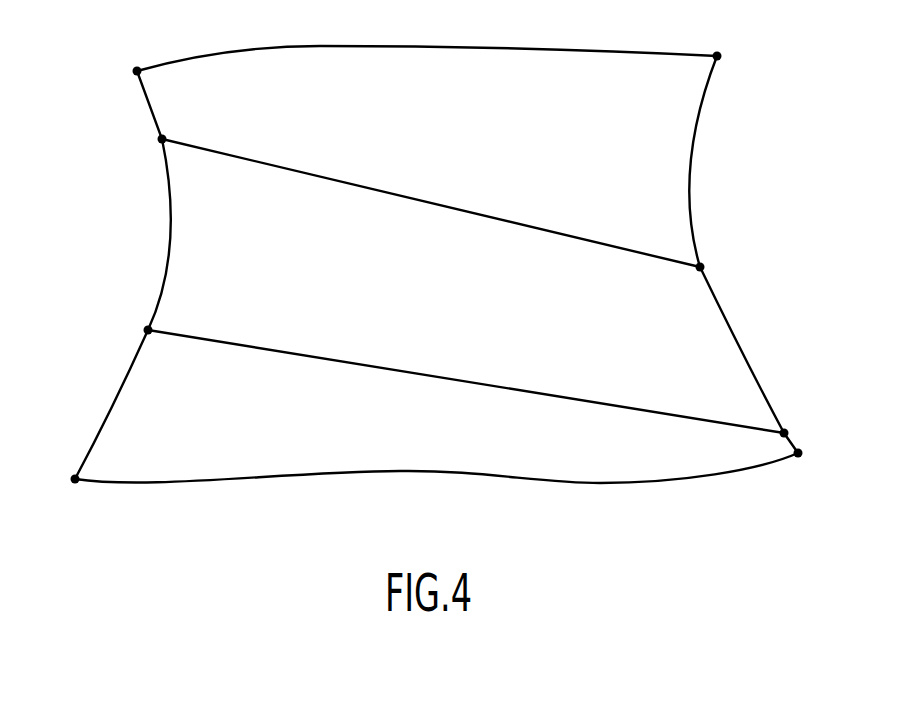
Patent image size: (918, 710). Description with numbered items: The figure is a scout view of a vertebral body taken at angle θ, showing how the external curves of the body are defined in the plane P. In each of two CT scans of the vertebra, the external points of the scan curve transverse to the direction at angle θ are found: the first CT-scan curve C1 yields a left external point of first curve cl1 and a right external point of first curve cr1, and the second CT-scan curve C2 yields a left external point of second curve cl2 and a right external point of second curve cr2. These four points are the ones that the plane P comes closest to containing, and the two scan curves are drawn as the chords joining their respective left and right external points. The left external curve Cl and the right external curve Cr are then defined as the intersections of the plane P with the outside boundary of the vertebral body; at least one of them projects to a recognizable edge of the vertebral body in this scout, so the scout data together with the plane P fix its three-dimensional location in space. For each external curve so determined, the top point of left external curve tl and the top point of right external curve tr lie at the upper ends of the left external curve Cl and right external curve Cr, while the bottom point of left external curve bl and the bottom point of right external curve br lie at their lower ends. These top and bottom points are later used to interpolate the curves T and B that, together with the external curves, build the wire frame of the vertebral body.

The left external curve Cl is at (158, 275).
The right external curve Cr is at (708, 254).
The first CT-scan curve C1 is at (431, 203).
The second CT-scan curve C2 is at (466, 380).
The top point of left external curve tl is at (99, 66).
The top point of right external curve tr is at (748, 59).
The bottom point of left external curve bl is at (47, 496).
The bottom point of right external curve br is at (825, 480).
The left external point of first curve cl1 is at (127, 141).
The left external point of second curve cl2 is at (114, 321).
The right external point of first curve cr1 is at (734, 272).
The right external point of second curve cr2 is at (818, 426).